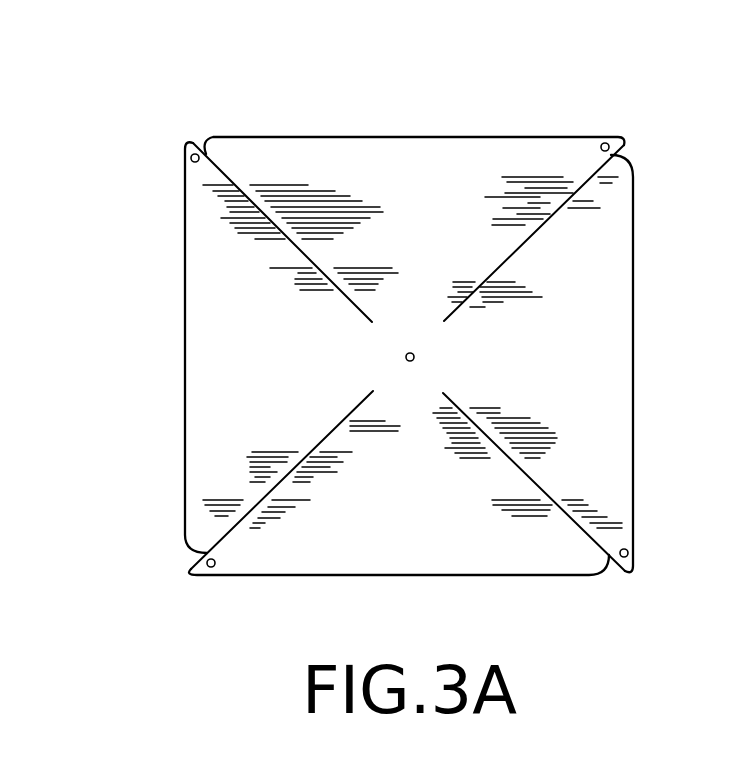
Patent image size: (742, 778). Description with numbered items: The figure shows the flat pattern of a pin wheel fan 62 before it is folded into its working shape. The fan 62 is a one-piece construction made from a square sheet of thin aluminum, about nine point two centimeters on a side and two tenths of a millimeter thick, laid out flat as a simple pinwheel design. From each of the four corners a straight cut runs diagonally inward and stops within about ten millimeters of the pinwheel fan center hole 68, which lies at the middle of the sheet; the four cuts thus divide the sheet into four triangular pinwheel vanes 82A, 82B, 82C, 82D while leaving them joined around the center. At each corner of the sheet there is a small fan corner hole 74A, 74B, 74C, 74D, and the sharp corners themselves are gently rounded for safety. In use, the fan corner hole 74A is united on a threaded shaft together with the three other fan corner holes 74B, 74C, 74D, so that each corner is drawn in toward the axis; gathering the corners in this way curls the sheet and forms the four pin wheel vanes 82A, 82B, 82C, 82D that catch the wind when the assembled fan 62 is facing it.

The pin wheel fan 62 is at (375, 126).
The pinwheel fan center hole 68 is at (414, 353).
The fan corner hole 74A is at (191, 158).
The fan corner hole 74B is at (610, 147).
The fan corner hole 74C is at (628, 550).
The fan corner hole 74D is at (207, 565).
The pinwheel vane 82A is at (227, 465).
The pinwheel vane 82B is at (252, 170).
The pinwheel vane 82C is at (603, 190).
The pinwheel vane 82D is at (557, 542).